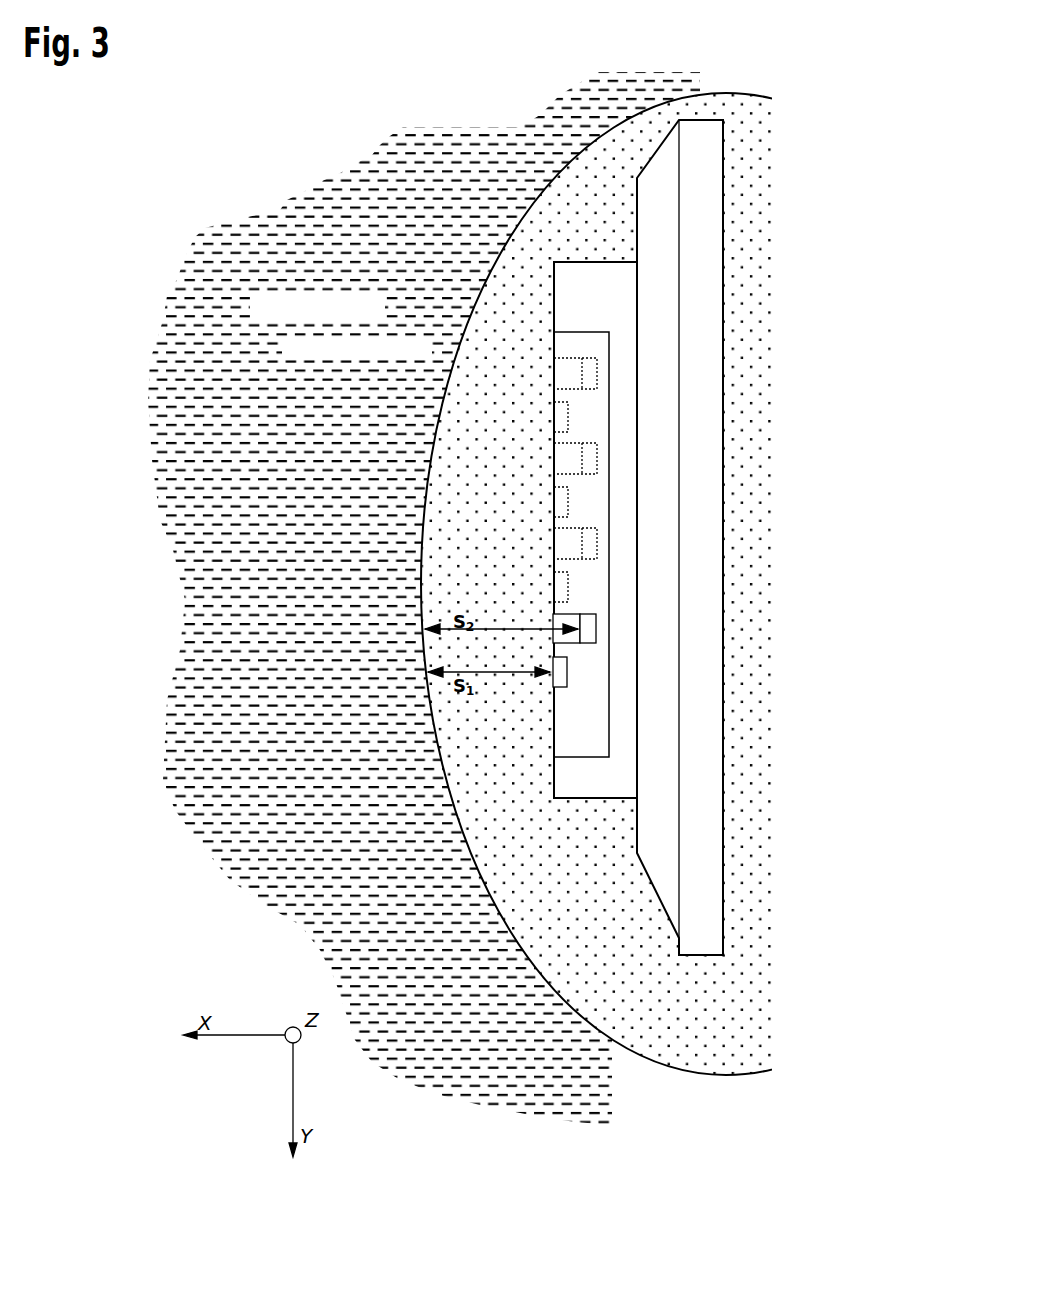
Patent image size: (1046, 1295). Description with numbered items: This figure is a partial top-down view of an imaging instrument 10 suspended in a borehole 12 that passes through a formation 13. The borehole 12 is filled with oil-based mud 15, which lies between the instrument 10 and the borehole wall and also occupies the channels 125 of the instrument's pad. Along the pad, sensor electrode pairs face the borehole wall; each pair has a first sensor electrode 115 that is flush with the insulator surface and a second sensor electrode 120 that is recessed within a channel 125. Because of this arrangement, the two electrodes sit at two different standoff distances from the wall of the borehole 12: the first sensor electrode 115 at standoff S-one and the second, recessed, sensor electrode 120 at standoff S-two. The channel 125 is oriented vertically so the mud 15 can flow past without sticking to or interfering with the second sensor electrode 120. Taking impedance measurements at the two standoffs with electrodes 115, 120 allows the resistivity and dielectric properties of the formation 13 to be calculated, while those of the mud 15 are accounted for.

The imaging instrument 10 is at (708, 303).
The borehole 12 is at (726, 584).
The formation 13 is at (523, 647).
The oil-based mud 15 is at (726, 584).
The first sensor electrode 115 is at (567, 673).
The second sensor electrode 120 is at (596, 628).
The channel 125 is at (568, 615).